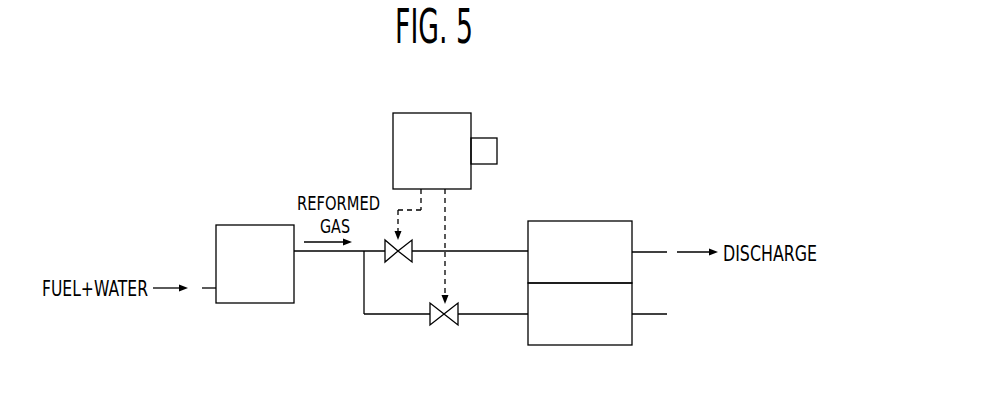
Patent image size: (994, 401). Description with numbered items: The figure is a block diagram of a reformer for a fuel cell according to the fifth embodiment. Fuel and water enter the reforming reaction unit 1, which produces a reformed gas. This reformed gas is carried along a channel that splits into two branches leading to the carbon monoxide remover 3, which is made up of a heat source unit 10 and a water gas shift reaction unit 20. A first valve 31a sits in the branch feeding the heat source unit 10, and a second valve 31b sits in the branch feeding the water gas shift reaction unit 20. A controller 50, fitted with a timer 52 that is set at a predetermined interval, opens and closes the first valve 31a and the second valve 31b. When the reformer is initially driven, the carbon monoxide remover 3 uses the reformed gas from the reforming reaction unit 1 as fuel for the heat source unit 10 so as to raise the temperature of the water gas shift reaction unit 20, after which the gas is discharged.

The reforming reaction unit 1 is at (255, 225).
The carbon monoxide remover 3 is at (597, 258).
The heat source unit 10 is at (585, 221).
The water gas shift reaction unit 20 is at (585, 345).
The first valve 31a is at (401, 263).
The second valve 31b is at (447, 326).
The controller 50 is at (431, 113).
The timer 52 is at (484, 138).